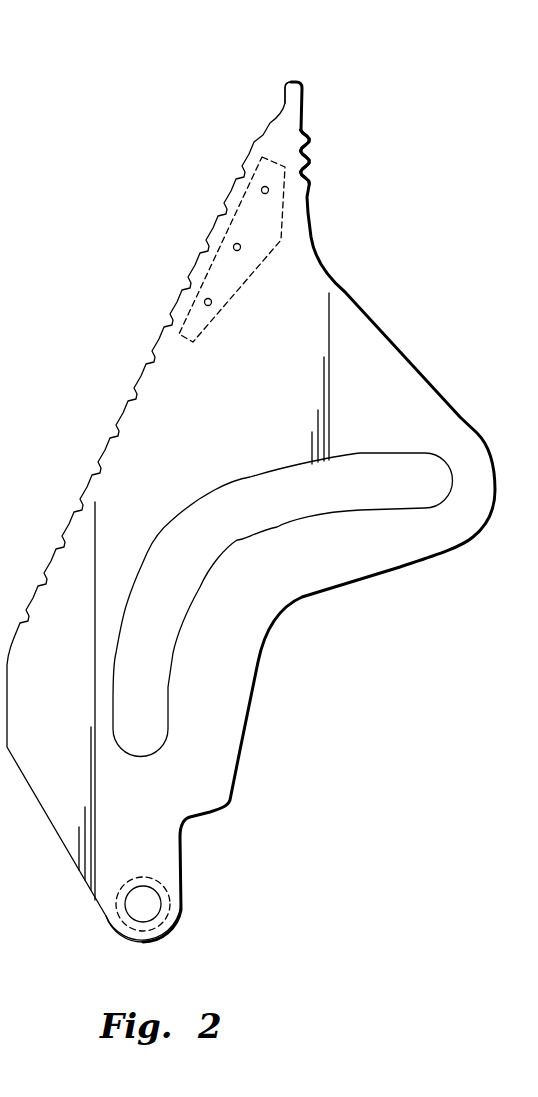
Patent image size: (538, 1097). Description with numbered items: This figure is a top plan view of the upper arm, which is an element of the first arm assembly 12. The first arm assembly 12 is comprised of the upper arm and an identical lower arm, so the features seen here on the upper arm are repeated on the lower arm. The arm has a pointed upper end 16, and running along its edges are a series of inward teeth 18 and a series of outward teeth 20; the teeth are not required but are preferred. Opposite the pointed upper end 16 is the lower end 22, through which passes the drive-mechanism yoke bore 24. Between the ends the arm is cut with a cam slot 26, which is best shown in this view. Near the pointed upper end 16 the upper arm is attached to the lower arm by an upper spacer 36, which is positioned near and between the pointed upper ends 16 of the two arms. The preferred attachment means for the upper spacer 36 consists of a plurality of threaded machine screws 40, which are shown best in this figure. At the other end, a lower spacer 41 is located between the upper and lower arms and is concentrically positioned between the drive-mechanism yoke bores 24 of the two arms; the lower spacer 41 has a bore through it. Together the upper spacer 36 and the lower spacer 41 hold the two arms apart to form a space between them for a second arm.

The first arm assembly 12 is at (251, 486).
The pointed upper ends 16 is at (295, 92).
The inward teeth 18 is at (311, 158).
The outward teeth 20 is at (225, 209).
The lower end 22 is at (153, 938).
The drive-mechanism yoke bore 24 is at (160, 897).
The cam slot 26 is at (148, 662).
The upper spacer 36 is at (263, 218).
The threaded machine screws 40 is at (262, 188).
The lower spacer 41 is at (150, 877).